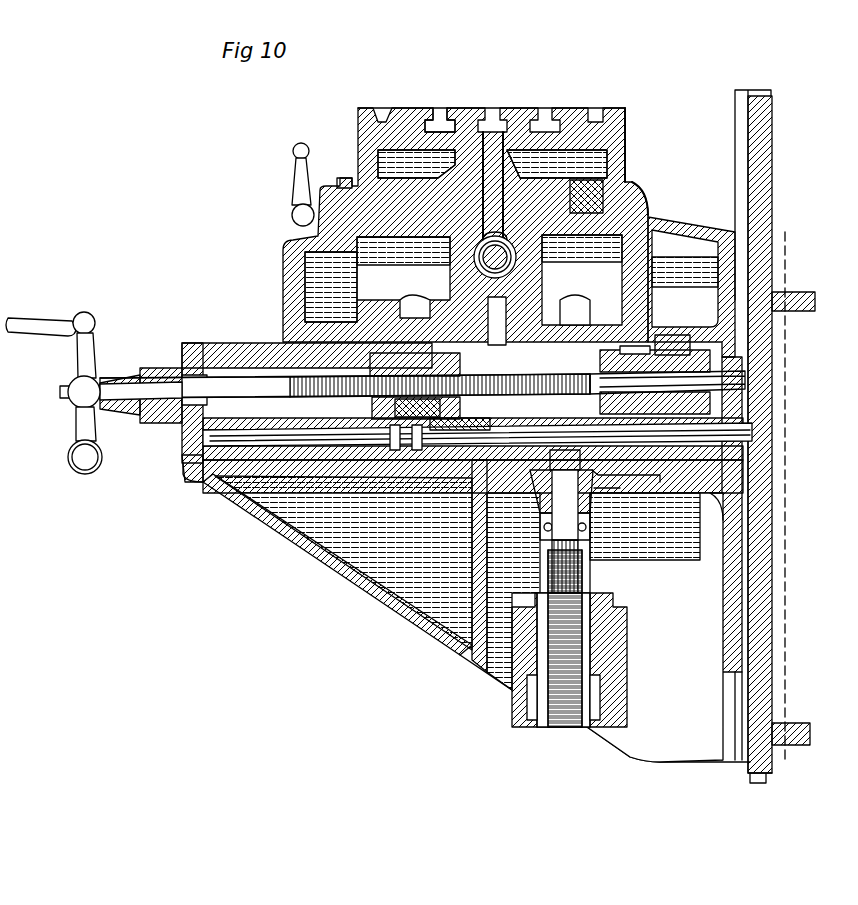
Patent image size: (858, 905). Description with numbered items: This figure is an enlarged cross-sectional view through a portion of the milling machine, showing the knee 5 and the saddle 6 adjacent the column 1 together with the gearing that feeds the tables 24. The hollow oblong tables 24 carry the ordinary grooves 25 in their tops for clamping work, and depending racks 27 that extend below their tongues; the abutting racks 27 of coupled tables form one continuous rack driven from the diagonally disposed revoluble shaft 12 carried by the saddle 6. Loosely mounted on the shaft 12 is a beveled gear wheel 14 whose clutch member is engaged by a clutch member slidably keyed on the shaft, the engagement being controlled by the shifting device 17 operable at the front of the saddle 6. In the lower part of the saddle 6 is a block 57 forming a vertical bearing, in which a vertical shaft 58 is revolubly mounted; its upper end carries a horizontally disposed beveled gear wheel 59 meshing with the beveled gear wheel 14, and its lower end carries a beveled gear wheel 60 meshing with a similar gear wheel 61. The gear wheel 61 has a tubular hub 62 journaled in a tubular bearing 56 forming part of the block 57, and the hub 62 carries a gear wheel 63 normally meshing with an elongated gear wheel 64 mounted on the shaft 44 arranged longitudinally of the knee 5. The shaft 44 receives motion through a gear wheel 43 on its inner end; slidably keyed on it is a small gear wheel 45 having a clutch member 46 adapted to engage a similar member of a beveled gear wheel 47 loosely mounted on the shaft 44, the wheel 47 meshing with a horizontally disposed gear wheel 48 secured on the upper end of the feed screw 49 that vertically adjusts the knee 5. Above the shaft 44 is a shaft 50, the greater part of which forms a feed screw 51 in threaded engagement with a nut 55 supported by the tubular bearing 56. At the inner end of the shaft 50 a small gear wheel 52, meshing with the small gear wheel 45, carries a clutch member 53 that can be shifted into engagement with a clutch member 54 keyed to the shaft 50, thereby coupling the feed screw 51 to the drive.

The column 1 is at (775, 358).
The knee 5 is at (325, 562).
The saddle 6 is at (290, 240).
The revoluble shaft 12 is at (628, 160).
The beveled gear wheel 14 is at (480, 240).
The shifting device 17 is at (292, 160).
The hollow oblong tables 24 is at (410, 108).
The grooves 25 is at (478, 110).
The longitudinal depending racks 27 is at (508, 200).
The gear wheel 43 is at (745, 470).
The shaft 44 is at (178, 452).
The small gear wheel 45 is at (655, 493).
The clutch member 46 is at (635, 512).
The beveled gear wheel 47 is at (585, 535).
The horizontally disposed gear wheel 48 is at (462, 525).
The feed screw 49 is at (512, 640).
The shaft 50 is at (222, 372).
The feed screw 51 is at (290, 380).
The small gear wheel 52 is at (672, 268).
The clutch member 53 is at (648, 345).
The clutch member 54 is at (639, 385).
The nut 55 is at (463, 388).
The tubular bearing 56 is at (440, 450).
The block 57 is at (403, 277).
The vertical shaft 58 is at (580, 252).
The beveled gear wheel 59 is at (640, 194).
The beveled gear wheel 60 is at (582, 302).
The gear wheel 61 is at (352, 287).
The tubular hub 62 is at (343, 563).
The gear wheel 63 is at (300, 448).
The elongated gear wheel 64 is at (215, 490).